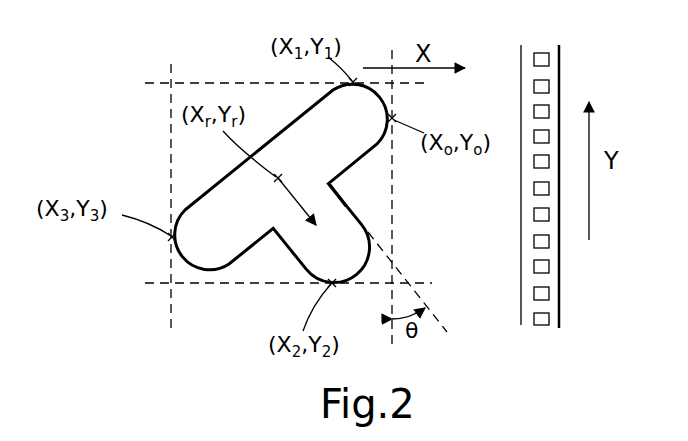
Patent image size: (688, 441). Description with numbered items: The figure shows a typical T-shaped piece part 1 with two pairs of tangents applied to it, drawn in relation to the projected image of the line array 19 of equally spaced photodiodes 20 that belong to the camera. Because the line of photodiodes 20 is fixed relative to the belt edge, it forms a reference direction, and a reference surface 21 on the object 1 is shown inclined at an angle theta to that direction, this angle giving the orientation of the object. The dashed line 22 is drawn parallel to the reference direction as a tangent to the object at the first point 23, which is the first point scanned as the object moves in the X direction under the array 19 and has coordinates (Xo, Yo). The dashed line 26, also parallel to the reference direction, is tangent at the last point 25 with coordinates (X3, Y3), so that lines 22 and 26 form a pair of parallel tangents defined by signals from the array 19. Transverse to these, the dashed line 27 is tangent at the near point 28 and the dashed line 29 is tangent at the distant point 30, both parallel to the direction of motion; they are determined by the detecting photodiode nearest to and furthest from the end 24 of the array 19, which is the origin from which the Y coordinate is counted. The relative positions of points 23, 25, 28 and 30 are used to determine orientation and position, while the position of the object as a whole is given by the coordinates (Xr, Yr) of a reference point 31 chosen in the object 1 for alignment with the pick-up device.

The T-shaped piece part 1 is at (197, 268).
The line array of photodiodes 19 is at (552, 67).
The photodiodes 20 is at (550, 242).
The reference surface 21 is at (346, 202).
The dashed line 22 is at (393, 218).
The first point 23 is at (394, 118).
The end of the array 24 is at (550, 318).
The last point 25 is at (170, 238).
The dashed line 26 is at (168, 139).
The dashed line 27 is at (247, 283).
The near point 28 is at (333, 284).
The dashed line 29 is at (232, 83).
The distant point 30 is at (354, 82).
The reference point 31 is at (277, 180).